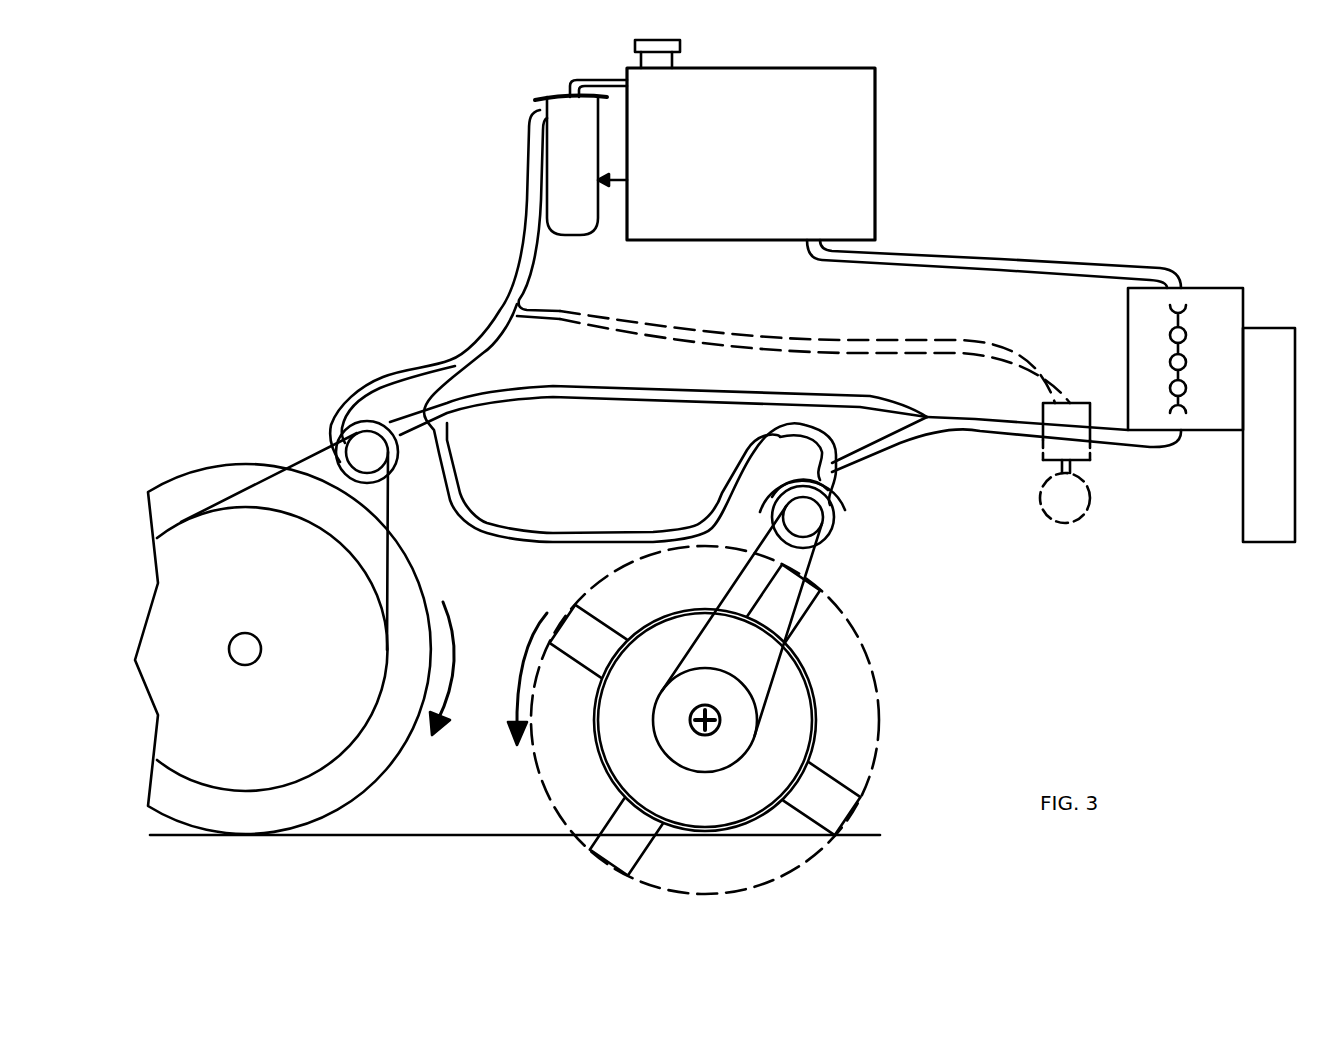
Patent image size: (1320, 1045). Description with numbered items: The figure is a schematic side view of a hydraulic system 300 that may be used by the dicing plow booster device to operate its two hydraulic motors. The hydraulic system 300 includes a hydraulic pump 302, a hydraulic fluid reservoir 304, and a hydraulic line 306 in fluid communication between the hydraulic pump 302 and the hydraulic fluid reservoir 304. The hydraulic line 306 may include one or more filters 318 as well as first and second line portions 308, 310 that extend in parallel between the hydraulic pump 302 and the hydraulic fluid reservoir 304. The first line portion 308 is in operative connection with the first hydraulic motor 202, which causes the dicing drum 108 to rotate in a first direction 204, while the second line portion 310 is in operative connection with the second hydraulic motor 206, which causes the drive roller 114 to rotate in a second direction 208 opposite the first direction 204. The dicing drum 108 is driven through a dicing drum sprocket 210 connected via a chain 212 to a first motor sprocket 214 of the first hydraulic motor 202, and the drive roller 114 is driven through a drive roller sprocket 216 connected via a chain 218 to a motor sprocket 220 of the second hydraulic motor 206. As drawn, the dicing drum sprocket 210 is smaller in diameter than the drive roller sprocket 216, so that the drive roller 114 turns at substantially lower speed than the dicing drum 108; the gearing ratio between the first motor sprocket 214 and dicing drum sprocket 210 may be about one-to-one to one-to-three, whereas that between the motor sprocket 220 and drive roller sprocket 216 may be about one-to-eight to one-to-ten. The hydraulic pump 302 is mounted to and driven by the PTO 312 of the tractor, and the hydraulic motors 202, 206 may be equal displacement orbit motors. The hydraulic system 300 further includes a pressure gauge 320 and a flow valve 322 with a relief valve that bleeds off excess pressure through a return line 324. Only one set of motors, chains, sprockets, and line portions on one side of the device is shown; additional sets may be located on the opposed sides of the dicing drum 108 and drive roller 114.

The hydraulic system 300 is at (1040, 122).
The hydraulic fluid reservoir 304 is at (755, 240).
The filter 318 is at (580, 237).
The second line portion 310 is at (553, 543).
The first line portion 308 is at (600, 386).
The hydraulic line 306 is at (1003, 418).
The return line 324 is at (945, 340).
The hydraulic pump 302 is at (1128, 343).
The PTO 312 is at (1272, 542).
The flow valve 322 is at (1110, 382).
The pressure gauge 320 is at (1040, 493).
The chain 218 is at (237, 500).
The drive roller 114 is at (390, 753).
The drive roller sprocket 216 is at (343, 757).
The second hydraulic motor 206 is at (390, 465).
The motor sprocket 220 is at (350, 477).
The second direction 208 is at (457, 660).
The first direction 204 is at (513, 703).
The first hydraulic motor 202 is at (832, 533).
The first motor sprocket 214 is at (800, 548).
The chain 212 is at (730, 592).
The dicing drum 108 is at (810, 738).
The dicing drum sprocket 210 is at (710, 772).